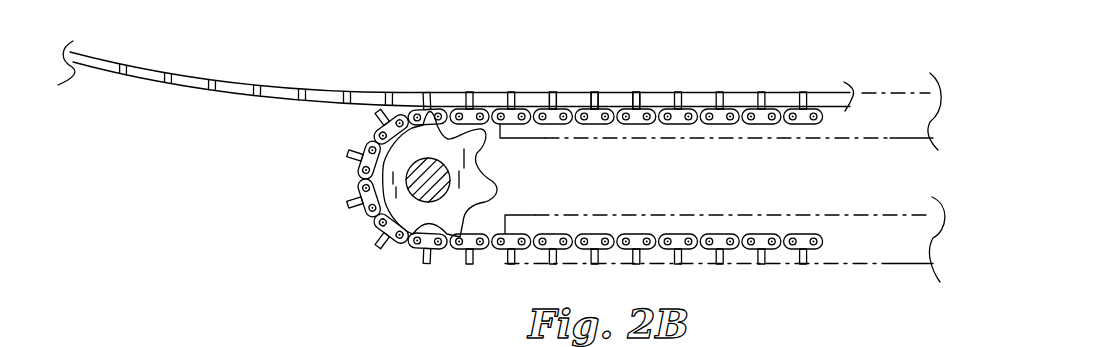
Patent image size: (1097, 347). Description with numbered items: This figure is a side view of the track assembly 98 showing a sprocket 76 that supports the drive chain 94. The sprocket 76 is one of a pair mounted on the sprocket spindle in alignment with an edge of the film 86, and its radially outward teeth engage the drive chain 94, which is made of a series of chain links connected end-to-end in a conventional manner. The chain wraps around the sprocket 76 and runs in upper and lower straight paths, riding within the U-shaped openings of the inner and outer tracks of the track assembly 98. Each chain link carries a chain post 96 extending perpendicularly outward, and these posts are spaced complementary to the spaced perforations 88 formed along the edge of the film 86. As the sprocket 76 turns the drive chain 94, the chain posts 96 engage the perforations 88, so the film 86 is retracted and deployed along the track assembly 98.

The sprocket 76 is at (397, 152).
The film 86 is at (238, 84).
The perforations 88 is at (185, 89).
The drive chain 94 is at (707, 92).
The chain post 96 is at (637, 92).
The track assembly 98 is at (815, 92).